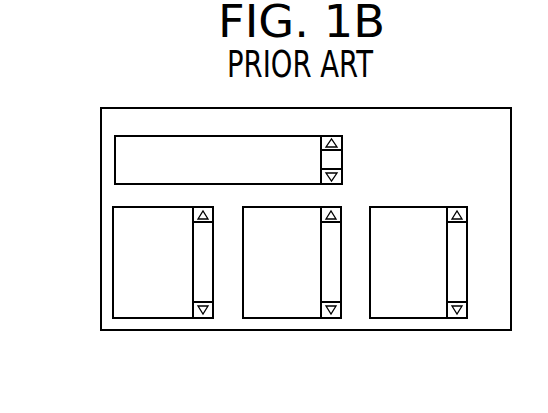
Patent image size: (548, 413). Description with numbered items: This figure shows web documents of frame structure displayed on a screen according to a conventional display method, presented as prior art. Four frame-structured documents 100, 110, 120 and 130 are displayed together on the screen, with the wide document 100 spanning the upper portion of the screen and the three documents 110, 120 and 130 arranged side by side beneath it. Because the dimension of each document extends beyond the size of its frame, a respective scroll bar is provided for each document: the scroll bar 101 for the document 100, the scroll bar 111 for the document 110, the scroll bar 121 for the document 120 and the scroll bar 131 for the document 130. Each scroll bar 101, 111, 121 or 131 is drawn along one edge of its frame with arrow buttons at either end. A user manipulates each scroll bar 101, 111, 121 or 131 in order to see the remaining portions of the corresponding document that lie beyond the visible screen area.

The frame-structured document 100 is at (142, 136).
The scroll bar 101 is at (333, 162).
The frame-structured document 110 is at (165, 308).
The scroll bar 111 is at (208, 257).
The frame-structured document 120 is at (297, 310).
The scroll bar 121 is at (333, 257).
The frame-structured document 130 is at (420, 310).
The scroll bar 131 is at (459, 257).